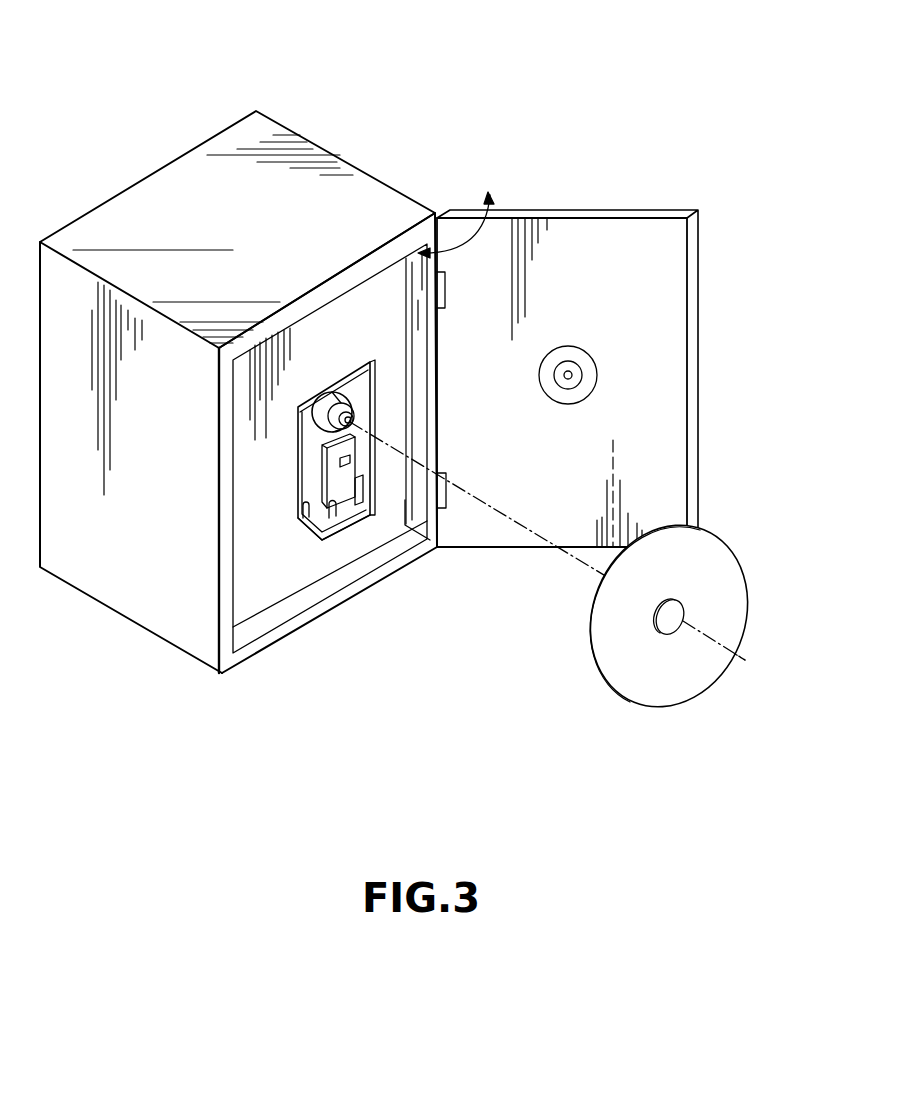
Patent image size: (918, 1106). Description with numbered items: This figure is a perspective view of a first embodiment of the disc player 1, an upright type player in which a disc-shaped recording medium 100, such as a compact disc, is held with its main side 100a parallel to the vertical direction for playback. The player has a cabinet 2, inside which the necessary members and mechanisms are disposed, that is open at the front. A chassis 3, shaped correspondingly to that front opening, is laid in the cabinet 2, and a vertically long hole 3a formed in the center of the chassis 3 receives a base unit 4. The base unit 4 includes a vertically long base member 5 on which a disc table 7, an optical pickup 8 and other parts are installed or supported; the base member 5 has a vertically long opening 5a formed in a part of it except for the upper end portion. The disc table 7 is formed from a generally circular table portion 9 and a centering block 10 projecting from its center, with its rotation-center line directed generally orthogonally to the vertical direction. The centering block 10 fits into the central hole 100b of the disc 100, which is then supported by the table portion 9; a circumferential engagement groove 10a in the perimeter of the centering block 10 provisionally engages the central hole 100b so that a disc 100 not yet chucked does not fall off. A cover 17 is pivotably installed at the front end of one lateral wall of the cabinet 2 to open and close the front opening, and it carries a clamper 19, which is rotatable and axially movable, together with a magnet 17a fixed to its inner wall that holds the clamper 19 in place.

The disc player 1 is at (439, 131).
The cabinet 2 is at (120, 583).
The chassis 3 is at (248, 575).
The vertically long hole 3a is at (307, 523).
The base unit 4 is at (350, 515).
The base member 5 is at (308, 517).
The vertically long opening 5a is at (367, 500).
The disc table 7 is at (330, 392).
The optical pickup 8 is at (333, 467).
The table portion 9 is at (318, 423).
The centering block 10 is at (363, 392).
The engagement groove 10a is at (347, 419).
The cover 17 is at (564, 238).
The magnet 17a is at (575, 374).
The clamper 19 is at (583, 360).
The disc-shaped recording medium 100 is at (692, 662).
The main side 100a is at (713, 547).
The central hole 100b is at (670, 637).